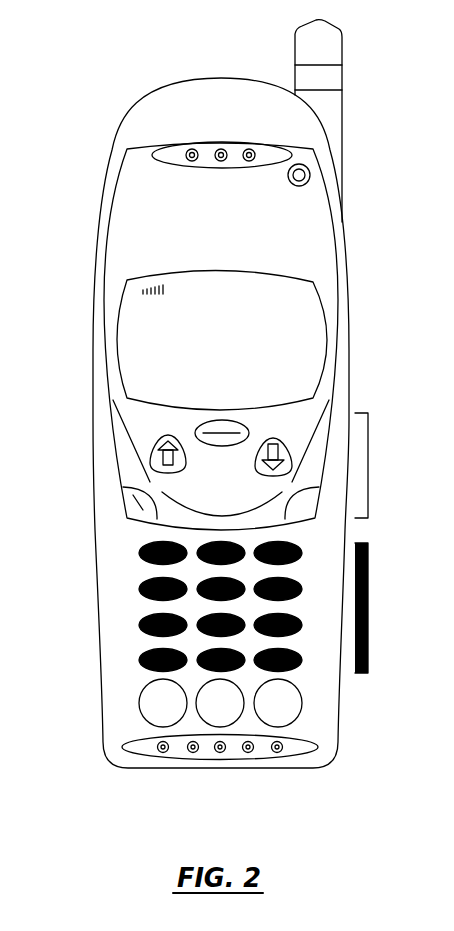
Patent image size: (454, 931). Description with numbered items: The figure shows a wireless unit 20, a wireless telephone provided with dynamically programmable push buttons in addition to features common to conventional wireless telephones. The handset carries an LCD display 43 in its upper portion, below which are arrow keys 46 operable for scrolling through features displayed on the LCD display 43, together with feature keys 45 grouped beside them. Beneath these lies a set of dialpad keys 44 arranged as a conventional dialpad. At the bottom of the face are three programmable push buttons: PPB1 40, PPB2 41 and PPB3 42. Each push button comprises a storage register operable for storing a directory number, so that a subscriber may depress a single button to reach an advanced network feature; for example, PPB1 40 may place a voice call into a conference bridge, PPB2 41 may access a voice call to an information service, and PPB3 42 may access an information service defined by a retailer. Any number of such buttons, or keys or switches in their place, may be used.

The wireless unit 20 is at (103, 167).
The LCD display 43 is at (118, 313).
The arrow keys 46 is at (157, 433).
The feature keys 45 is at (368, 467).
The set of dialpad keys 44 is at (368, 607).
The PPB1 40 is at (148, 723).
The PPB2 41 is at (203, 720).
The PPB3 42 is at (262, 720).